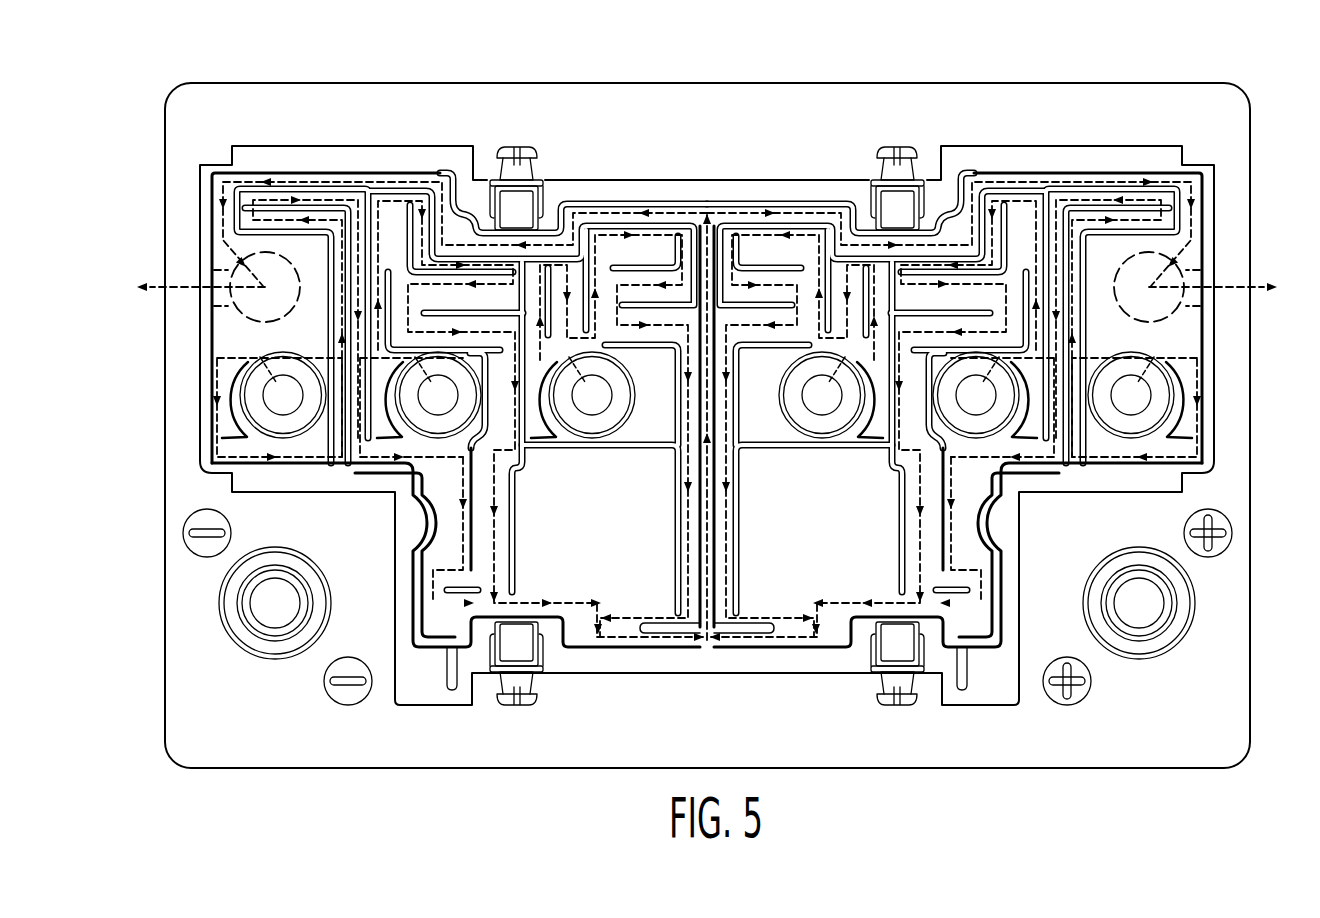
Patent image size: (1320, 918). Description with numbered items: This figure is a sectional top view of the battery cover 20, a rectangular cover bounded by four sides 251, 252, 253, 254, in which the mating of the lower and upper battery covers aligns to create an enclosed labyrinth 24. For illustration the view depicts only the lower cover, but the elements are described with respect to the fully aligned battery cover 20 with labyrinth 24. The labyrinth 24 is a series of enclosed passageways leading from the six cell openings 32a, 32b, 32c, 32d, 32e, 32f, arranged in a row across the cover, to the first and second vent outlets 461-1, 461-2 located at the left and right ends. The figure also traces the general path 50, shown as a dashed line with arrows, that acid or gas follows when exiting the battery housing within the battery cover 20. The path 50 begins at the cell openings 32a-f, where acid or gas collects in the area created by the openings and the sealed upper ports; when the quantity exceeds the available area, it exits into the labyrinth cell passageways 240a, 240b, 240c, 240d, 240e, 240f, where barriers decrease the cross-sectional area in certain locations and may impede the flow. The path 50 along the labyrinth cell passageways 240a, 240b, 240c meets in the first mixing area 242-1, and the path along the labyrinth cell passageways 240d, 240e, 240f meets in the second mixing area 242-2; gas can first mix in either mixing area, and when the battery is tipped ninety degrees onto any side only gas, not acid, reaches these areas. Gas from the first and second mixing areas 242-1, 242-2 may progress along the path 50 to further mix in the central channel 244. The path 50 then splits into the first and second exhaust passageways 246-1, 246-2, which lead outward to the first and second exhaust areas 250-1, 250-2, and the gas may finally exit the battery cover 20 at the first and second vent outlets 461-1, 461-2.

The battery cover 20 is at (1278, 59).
The labyrinth 24 is at (442, 632).
The cell opening 32a is at (270, 407).
The cell opening 32b is at (425, 407).
The cell opening 32c is at (579, 407).
The cell opening 32d is at (809, 407).
The cell opening 32e is at (963, 407).
The cell opening 32f is at (1118, 407).
The path 50 is at (787, 642).
The labyrinth cell passageway 240a is at (214, 453).
The labyrinth cell passageway 240b is at (483, 300).
The labyrinth cell passageway 240c is at (627, 247).
The labyrinth cell passageway 240d is at (757, 247).
The labyrinth cell passageway 240e is at (928, 300).
The labyrinth cell passageway 240f is at (1098, 448).
The first mixing area 242-1 is at (570, 540).
The second mixing area 242-2 is at (790, 540).
The channel 244 is at (690, 636).
The first exhaust passageway 246-1 is at (362, 188).
The second exhaust passageway 246-2 is at (1016, 190).
The first exhaust area 250-1 is at (295, 243).
The second exhaust area 250-2 is at (1140, 243).
The side 251 is at (692, 82).
The side 252 is at (1250, 360).
The side 253 is at (897, 770).
The side 254 is at (165, 400).
The first vent outlet 461-1 is at (160, 287).
The second vent outlet 461-2 is at (1257, 287).